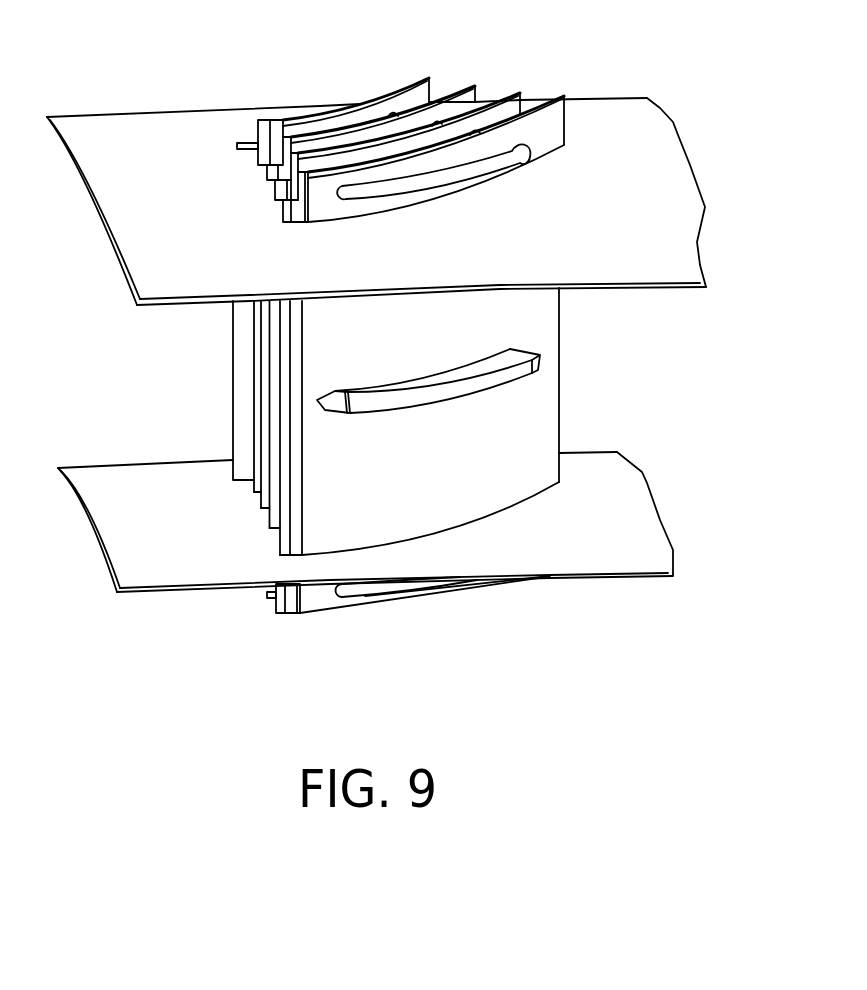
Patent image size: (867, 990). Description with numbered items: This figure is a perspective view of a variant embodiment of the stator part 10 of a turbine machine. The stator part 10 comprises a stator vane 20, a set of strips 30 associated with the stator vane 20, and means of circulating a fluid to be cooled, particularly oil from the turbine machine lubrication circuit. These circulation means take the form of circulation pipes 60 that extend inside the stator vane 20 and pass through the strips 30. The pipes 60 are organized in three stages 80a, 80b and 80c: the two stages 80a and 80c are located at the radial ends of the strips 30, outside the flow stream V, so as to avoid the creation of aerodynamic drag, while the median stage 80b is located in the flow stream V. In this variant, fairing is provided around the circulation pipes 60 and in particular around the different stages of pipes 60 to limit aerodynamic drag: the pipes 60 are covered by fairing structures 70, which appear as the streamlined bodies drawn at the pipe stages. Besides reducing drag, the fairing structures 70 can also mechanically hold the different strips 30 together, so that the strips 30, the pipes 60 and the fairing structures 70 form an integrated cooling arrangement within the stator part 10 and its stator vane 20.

The stator part 10 is at (241, 69).
The stator vane 20 is at (242, 373).
The strips 30 is at (469, 86).
The circulation pipes 60 is at (353, 199).
The fairing structures 70 is at (437, 400).
The stage of pipes 80a is at (470, 180).
The median stage of pipes 80b is at (340, 408).
The stage of pipes 80c is at (413, 588).
The flow stream V is at (126, 391).